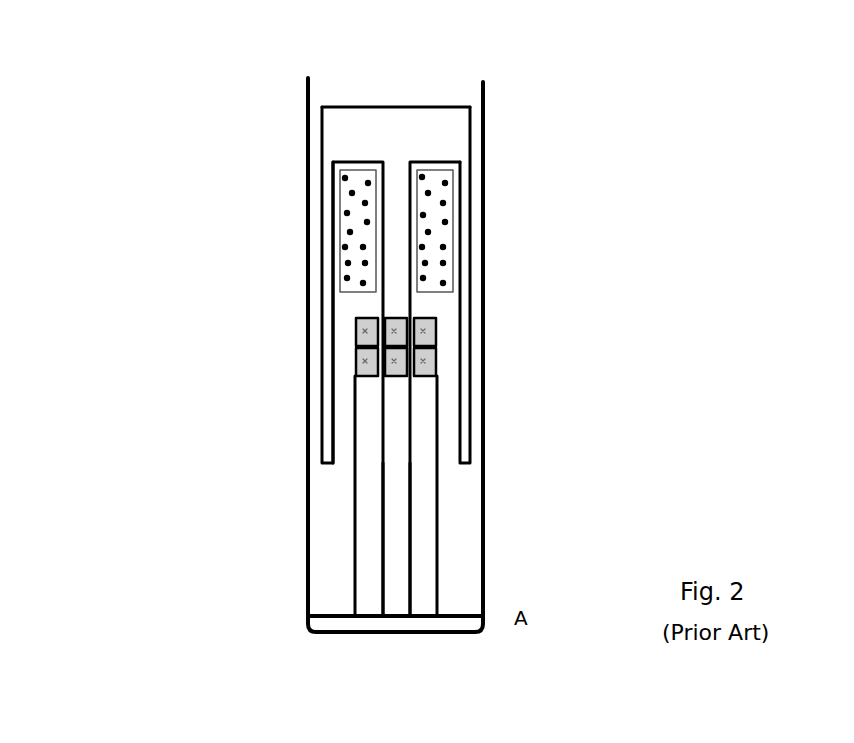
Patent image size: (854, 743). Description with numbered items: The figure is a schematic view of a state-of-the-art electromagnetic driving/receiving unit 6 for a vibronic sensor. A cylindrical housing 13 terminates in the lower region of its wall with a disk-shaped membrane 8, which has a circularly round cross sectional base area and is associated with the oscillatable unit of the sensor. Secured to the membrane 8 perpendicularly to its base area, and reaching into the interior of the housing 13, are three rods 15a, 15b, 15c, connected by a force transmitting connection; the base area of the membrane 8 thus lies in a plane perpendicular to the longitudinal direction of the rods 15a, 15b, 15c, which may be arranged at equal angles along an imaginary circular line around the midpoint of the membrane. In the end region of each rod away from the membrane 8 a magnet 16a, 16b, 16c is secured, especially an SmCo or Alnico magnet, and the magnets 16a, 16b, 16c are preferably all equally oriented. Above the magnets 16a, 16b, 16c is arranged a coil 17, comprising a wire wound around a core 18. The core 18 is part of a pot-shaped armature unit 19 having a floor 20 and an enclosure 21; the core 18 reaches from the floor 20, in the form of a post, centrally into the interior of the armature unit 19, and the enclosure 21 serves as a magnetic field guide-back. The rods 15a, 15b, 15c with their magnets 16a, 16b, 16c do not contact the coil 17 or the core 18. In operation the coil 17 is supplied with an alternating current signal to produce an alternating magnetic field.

The driving/receiving unit 6 is at (25, 14).
The membrane 8 is at (481, 632).
The housing 13 is at (485, 153).
The rod 15a is at (355, 508).
The rod 15b is at (398, 527).
The rod 15c is at (427, 597).
The magnet 16a is at (357, 343).
The magnet 16b is at (401, 378).
The magnet 16c is at (421, 340).
The coil 17 is at (448, 262).
The core 18 is at (404, 217).
The pot-shaped armature unit 19 is at (487, 30).
The floor 20 is at (398, 147).
The enclosure 21 is at (331, 210).